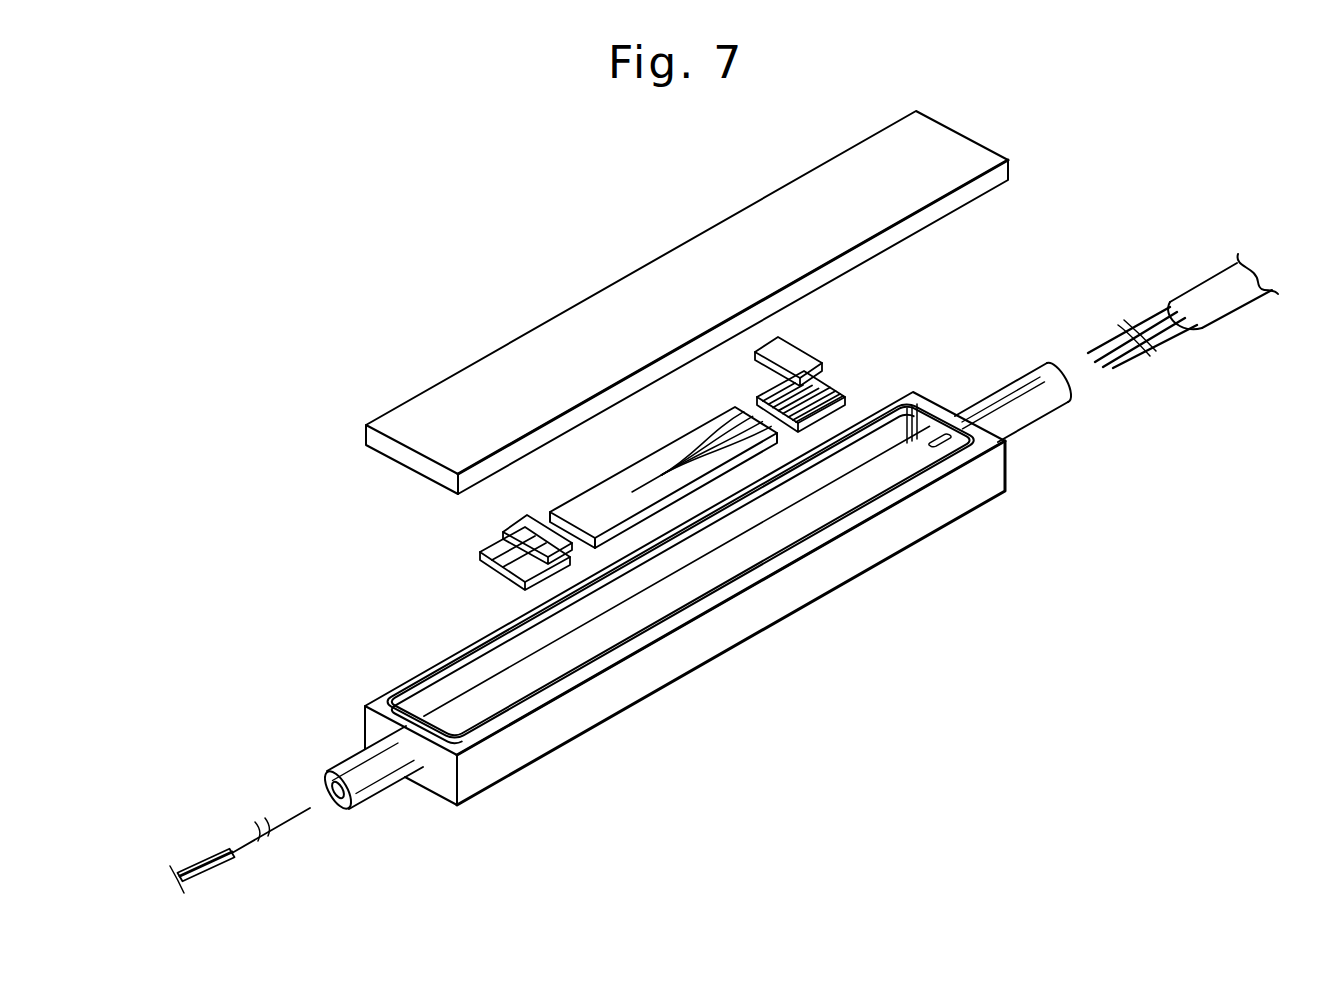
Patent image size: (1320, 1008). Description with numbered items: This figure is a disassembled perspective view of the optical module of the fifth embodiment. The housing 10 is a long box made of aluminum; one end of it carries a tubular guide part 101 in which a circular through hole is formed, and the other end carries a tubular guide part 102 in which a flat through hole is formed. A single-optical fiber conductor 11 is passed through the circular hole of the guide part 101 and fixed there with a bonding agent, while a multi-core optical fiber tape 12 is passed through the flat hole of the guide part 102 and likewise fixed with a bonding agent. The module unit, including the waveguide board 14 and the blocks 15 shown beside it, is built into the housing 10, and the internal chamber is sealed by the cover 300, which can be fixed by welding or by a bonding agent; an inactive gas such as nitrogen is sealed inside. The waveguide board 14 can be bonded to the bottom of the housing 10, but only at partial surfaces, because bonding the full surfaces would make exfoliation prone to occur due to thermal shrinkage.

The cover 300 is at (466, 380).
The housing 10 is at (748, 627).
The tubular guide part 101 is at (387, 780).
The tubular guide part 102 is at (1040, 418).
The waveguide board 14 is at (653, 460).
The fiber connector block 15 is at (458, 552).
The multi-core optical fiber tape 12 is at (1237, 310).
The single-optical fiber conductor 11 is at (200, 867).